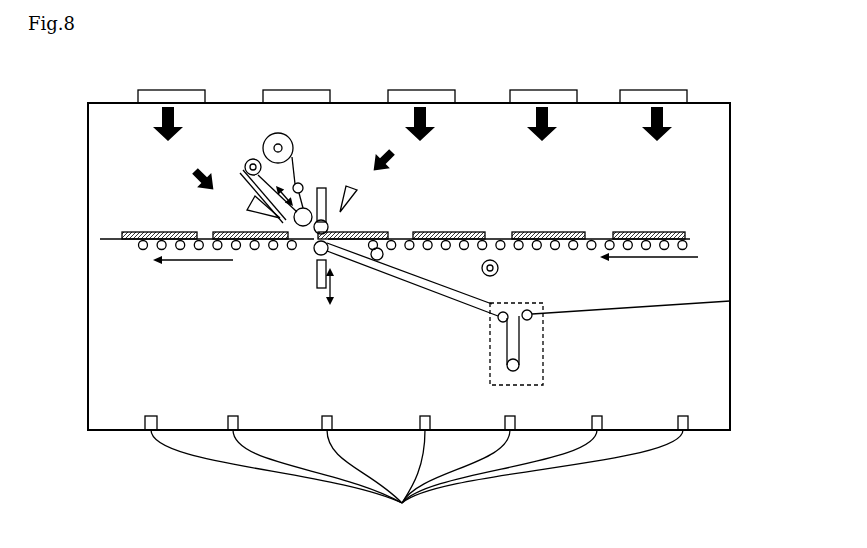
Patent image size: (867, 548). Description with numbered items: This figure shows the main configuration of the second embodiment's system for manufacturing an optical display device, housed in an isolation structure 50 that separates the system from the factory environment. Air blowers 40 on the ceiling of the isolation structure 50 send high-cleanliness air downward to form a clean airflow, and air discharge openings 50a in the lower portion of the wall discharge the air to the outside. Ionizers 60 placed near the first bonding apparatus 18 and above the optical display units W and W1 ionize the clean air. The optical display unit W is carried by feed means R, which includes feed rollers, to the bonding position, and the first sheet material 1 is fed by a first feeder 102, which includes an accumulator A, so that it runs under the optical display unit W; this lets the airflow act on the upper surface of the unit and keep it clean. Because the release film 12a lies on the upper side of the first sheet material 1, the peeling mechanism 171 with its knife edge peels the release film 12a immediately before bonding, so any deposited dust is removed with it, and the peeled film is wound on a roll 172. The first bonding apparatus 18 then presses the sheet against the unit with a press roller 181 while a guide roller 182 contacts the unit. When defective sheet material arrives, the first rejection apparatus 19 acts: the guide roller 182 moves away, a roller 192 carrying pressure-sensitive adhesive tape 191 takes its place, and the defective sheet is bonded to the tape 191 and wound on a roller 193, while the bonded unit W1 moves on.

The first sheet material 1 is at (131, 247).
The release film 12a is at (471, 279).
The first bonding apparatus 18 is at (337, 274).
The first rejection apparatus 19 is at (263, 161).
The air blower 40 is at (655, 90).
The isolation structure 50 is at (731, 306).
The air discharge opening 50a is at (416, 472).
The ionizer 60 is at (254, 203).
The first feeder 102 is at (557, 331).
The peeling mechanism 171 is at (357, 249).
The roll 172 is at (499, 269).
The press roller 181 is at (314, 246).
The guide roller 182 is at (329, 227).
The pressure-sensitive adhesive tape 191 is at (270, 136).
The roller 192 is at (306, 182).
The roller 193 is at (244, 167).
The accumulator A is at (534, 357).
The feed means R is at (606, 229).
The optical display unit W is at (651, 232).
The optical display unit W1 is at (143, 226).